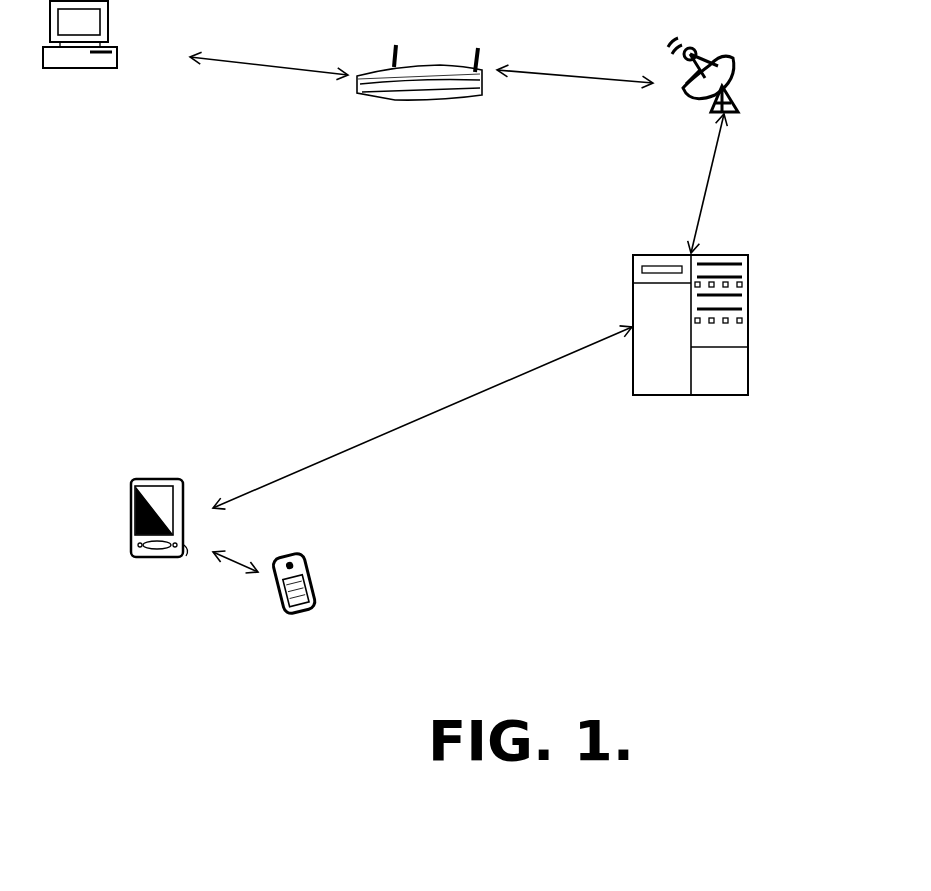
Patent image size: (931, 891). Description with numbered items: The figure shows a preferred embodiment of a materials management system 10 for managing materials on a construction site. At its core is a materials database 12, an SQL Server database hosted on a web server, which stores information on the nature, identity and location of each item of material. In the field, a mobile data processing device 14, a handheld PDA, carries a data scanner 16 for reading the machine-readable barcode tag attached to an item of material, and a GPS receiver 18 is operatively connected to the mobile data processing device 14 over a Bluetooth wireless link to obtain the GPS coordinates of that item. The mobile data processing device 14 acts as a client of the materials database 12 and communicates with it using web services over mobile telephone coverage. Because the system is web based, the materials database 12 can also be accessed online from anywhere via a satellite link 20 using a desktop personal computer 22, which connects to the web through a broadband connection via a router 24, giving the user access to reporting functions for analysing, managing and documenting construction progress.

The materials management system 10 is at (718, 200).
The materials database 12 is at (755, 300).
The mobile data processing device 14 is at (151, 477).
The data scanner 16 is at (164, 465).
The GPS receiver 18 is at (324, 565).
The satellite link 20 is at (742, 75).
The desktop personal computer 22 is at (81, 71).
The router 24 is at (415, 107).